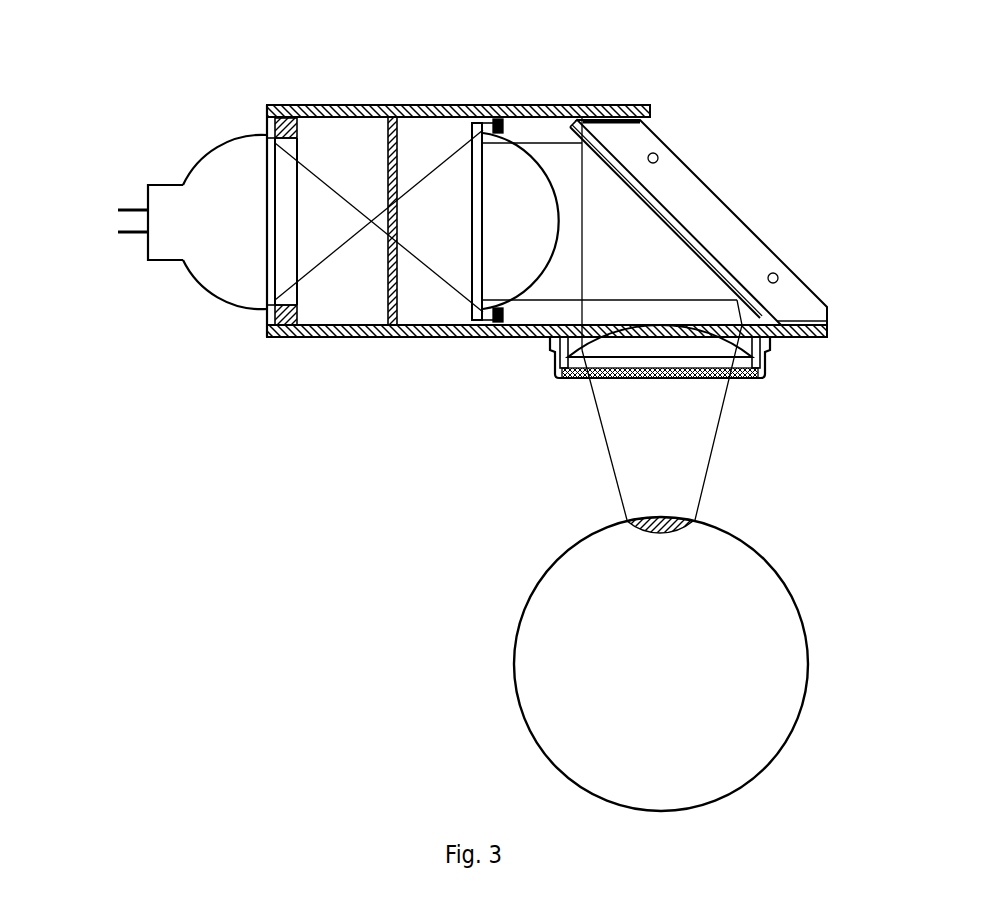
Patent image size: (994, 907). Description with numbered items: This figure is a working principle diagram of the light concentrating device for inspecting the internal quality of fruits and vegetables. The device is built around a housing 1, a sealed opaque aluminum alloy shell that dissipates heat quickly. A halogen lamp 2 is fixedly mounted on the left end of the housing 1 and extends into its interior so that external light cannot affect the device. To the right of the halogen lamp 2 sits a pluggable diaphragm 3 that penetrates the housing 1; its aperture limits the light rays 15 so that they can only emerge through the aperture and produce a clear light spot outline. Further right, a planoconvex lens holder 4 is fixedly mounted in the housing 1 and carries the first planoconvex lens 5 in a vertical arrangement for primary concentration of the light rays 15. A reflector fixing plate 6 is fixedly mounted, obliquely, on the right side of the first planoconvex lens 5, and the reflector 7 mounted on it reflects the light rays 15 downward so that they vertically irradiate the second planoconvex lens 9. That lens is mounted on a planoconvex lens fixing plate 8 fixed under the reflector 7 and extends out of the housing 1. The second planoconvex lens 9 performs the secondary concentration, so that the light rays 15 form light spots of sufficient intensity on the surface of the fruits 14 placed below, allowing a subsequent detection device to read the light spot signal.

The housing 1 is at (287, 337).
The halogen lamp 2 is at (222, 217).
The diaphragm 3 is at (393, 117).
The planoconvex lens holder 4 is at (478, 337).
The first planoconvex lens 5 is at (532, 175).
The reflector fixing plate 6 is at (668, 178).
The reflector 7 is at (688, 238).
The planoconvex lens fixing plate 8 is at (768, 352).
The second planoconvex lens 9 is at (577, 363).
The fruits 14 is at (750, 647).
The light rays 15 is at (715, 300).